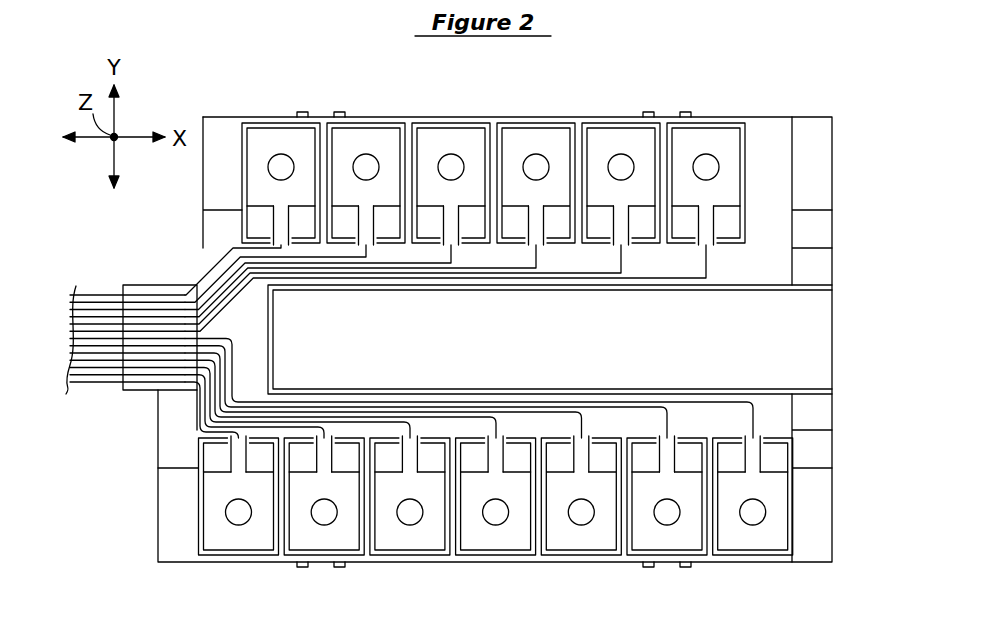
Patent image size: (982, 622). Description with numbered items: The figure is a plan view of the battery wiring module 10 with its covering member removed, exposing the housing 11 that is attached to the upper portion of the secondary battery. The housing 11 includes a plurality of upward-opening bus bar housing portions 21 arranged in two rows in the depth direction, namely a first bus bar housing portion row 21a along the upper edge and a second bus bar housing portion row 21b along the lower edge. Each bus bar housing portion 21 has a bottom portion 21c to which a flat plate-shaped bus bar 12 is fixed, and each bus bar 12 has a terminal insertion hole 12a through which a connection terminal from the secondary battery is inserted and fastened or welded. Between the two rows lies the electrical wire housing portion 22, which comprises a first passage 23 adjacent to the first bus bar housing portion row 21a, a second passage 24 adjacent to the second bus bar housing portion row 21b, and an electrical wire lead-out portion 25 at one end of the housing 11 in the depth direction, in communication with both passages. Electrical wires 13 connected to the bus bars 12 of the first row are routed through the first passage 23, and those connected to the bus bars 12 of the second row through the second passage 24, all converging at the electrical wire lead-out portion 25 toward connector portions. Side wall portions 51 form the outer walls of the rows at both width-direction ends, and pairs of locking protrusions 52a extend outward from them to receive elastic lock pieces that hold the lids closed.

The battery wiring module 10 is at (495, 314).
The housing 11 is at (712, 114).
The bus bar 12 is at (435, 137).
The terminal insertion hole 12a is at (455, 158).
The electrical wire 13 is at (100, 296).
The bus bar housing portion 21 is at (518, 125).
The first bus bar housing portion row 21a is at (555, 145).
The second bus bar housing portion row 21b is at (560, 543).
The bottom portion 21c is at (378, 452).
The electrical wire housing portion 22 is at (272, 336).
The first passage 23 is at (528, 282).
The second passage 24 is at (531, 395).
The electrical wire lead-out portion 25 is at (157, 292).
The side wall portion 51 is at (388, 115).
The locking protrusion 52a is at (343, 113).